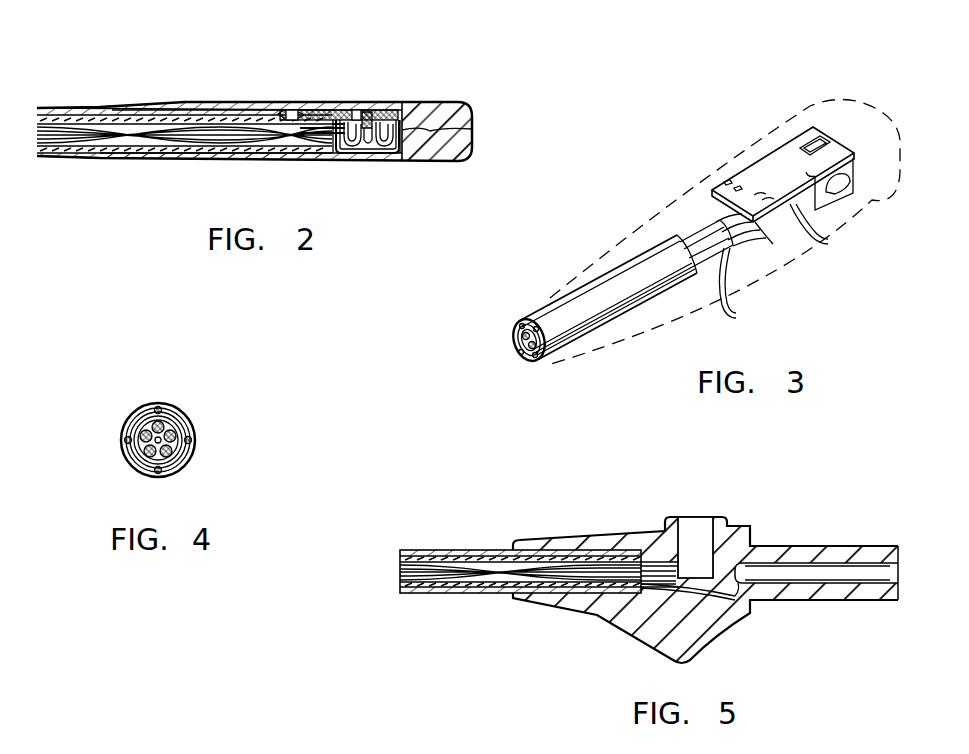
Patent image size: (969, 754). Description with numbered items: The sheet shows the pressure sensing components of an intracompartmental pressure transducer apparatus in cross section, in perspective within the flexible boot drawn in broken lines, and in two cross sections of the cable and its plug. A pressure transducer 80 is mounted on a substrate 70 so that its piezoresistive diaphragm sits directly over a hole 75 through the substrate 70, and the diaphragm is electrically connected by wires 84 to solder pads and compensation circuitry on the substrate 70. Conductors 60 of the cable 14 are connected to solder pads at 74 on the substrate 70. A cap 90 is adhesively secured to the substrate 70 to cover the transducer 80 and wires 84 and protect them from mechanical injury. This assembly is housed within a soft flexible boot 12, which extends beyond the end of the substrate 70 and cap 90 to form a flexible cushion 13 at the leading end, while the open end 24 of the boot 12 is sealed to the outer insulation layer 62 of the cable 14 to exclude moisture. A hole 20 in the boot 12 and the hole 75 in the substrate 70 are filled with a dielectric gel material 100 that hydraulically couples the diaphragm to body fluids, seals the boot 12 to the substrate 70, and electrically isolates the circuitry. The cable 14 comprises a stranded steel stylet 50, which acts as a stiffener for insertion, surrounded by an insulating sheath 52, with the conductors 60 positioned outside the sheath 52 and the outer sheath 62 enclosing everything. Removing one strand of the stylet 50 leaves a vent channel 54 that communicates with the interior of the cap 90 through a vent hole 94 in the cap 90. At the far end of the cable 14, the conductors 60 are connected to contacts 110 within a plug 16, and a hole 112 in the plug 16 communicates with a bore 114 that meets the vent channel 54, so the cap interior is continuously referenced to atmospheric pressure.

In FIG. 2, the flexible boot 12 is at (318, 161).
In FIG. 3, the flexible boot 12 is at (828, 127).
In FIG. 2, the flexible cushion 13 is at (440, 103).
In FIG. 3, the cable 14 is at (549, 347).
In FIG. 4, the cable 14 is at (135, 394).
In FIG. 5, the plug 16 is at (746, 540).
In FIG. 2, the hole in boot 20 is at (380, 108).
In FIG. 2, the open end of boot 24 is at (126, 104).
In FIG. 2, the stylet 50 is at (182, 140).
In FIG. 3, the stylet 50 is at (772, 236).
In FIG. 4, the stylet 50 is at (150, 440).
In FIG. 5, the stylet 50 is at (402, 575).
In FIG. 2, the insulating sheath 52 is at (120, 155).
In FIG. 4, the insulating sheath 52 is at (130, 420).
In FIG. 5, the insulating sheath 52 is at (402, 558).
In FIG. 4, the vent channel 54 is at (182, 436).
In FIG. 2, the conductors 60 is at (258, 103).
In FIG. 3, the conductors 60 is at (688, 232).
In FIG. 4, the conductors 60 is at (165, 408).
In FIG. 5, the conductors 60 is at (625, 612).
In FIG. 2, the outer insulation layer 62 is at (60, 156).
In FIG. 4, the outer insulation layer 62 is at (190, 462).
In FIG. 5, the outer insulation layer 62 is at (466, 552).
In FIG. 2, the substrate 70 is at (322, 108).
In FIG. 3, the substrate 70 is at (772, 170).
In FIG. 2, the solder pads 74 is at (289, 109).
In FIG. 3, the solder pads 74 is at (724, 184).
In FIG. 2, the hole in substrate 75 is at (357, 109).
In FIG. 3, the hole in substrate 75 is at (806, 146).
In FIG. 2, the pressure transducer 80 is at (369, 148).
In FIG. 2, the wires 84 is at (352, 154).
In FIG. 2, the cap 90 is at (476, 130).
In FIG. 3, the cap 90 is at (838, 195).
In FIG. 2, the vent hole 94 is at (338, 154).
In FIG. 2, the dielectric gel material 100 is at (370, 110).
In FIG. 5, the contacts 110 is at (814, 586).
In FIG. 5, the vent hole in plug 112 is at (690, 535).
In FIG. 5, the bore 114 is at (656, 558).